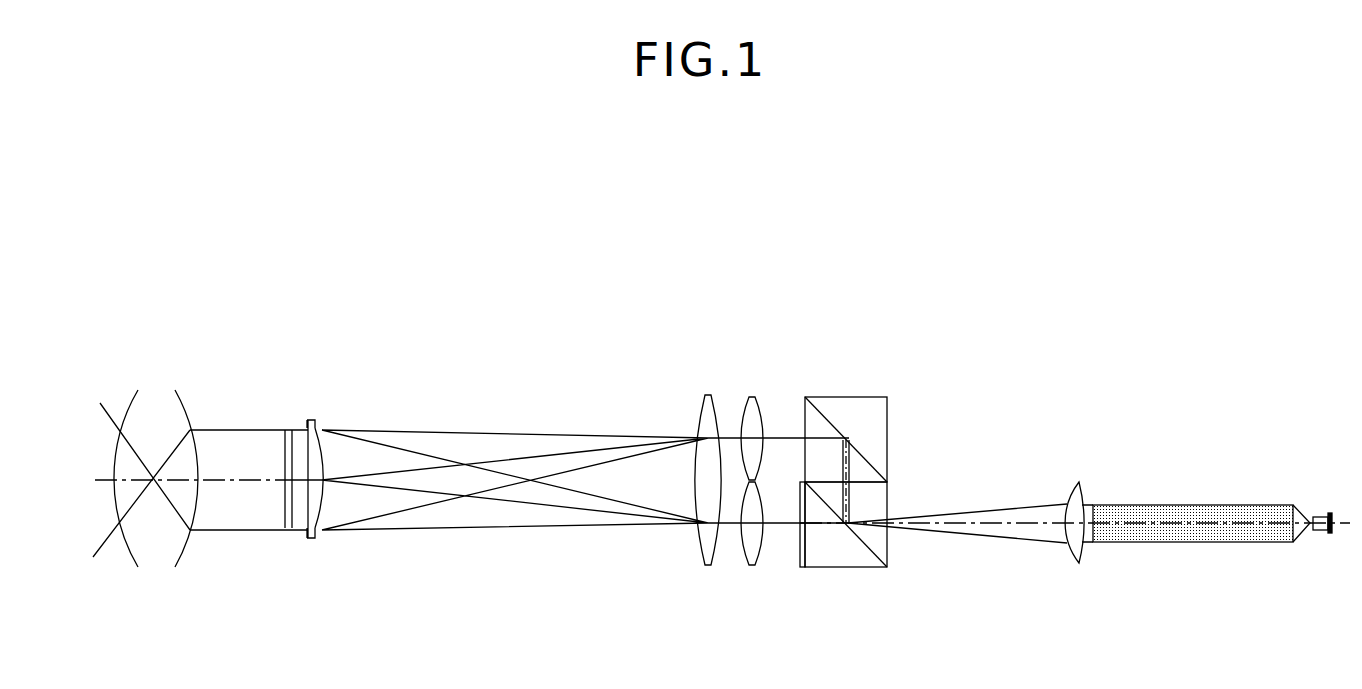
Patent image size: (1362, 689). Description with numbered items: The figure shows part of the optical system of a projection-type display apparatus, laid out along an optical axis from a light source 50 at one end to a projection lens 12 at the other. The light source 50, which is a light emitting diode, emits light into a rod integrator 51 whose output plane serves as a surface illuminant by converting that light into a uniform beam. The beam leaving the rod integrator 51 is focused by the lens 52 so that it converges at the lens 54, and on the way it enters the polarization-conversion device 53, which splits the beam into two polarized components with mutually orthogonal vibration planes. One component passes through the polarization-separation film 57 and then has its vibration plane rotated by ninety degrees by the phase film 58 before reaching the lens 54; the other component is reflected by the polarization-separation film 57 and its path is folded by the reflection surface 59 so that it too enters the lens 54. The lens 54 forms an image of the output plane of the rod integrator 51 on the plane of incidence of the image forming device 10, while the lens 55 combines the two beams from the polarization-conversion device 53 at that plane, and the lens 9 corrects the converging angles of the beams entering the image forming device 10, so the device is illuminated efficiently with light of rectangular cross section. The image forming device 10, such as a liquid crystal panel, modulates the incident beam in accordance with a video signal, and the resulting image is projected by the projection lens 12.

The projection lens 12 is at (155, 412).
The image forming device 10 is at (290, 428).
The lens 9 is at (313, 420).
The lens 55 is at (710, 395).
The lens 54 is at (753, 397).
The polarization-conversion device 53 is at (881, 397).
The reflection surface 59 is at (862, 457).
The polarization-separation film 57 is at (865, 553).
The phase film 58 is at (800, 567).
The lens 52 is at (1070, 493).
The rod integrator 51 is at (1172, 500).
The light source 50 is at (1330, 513).